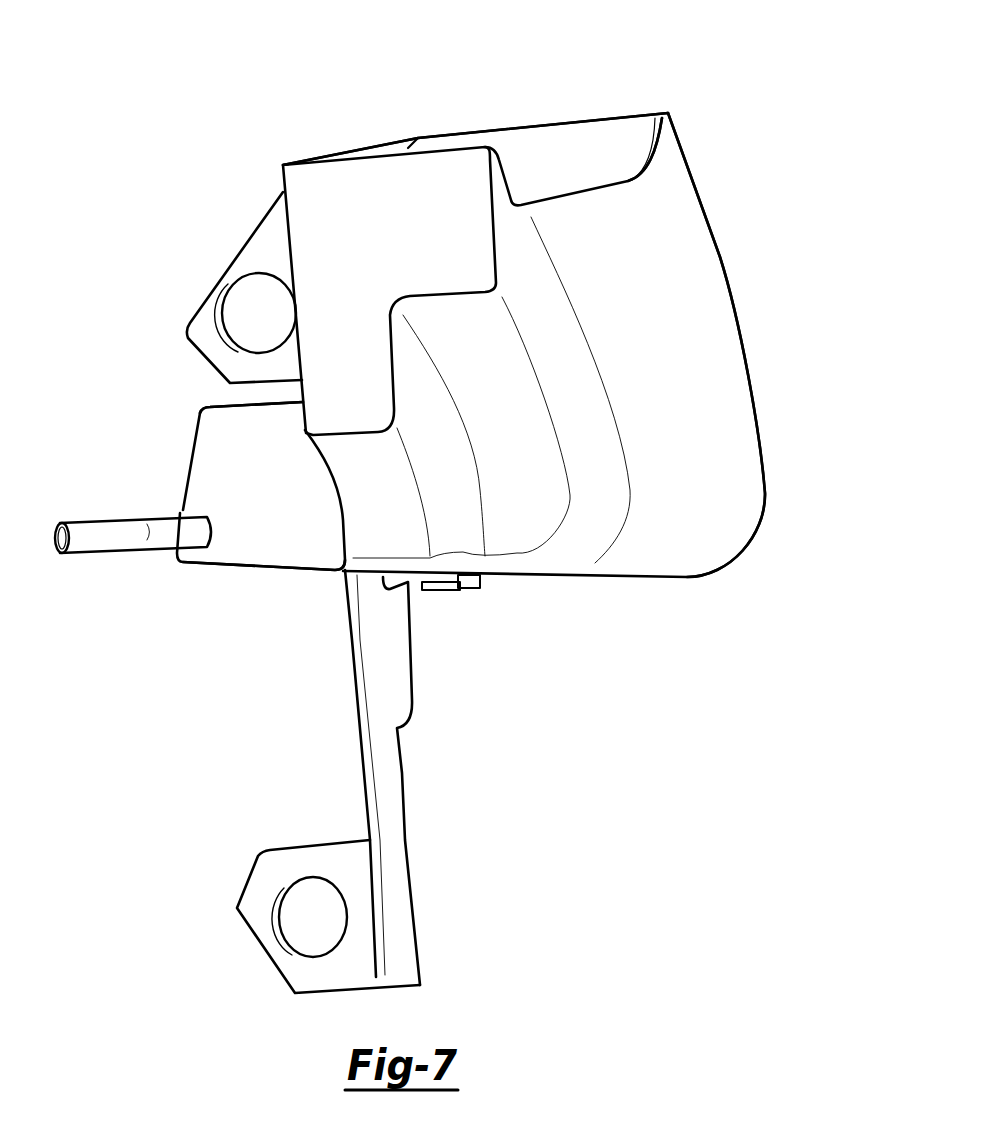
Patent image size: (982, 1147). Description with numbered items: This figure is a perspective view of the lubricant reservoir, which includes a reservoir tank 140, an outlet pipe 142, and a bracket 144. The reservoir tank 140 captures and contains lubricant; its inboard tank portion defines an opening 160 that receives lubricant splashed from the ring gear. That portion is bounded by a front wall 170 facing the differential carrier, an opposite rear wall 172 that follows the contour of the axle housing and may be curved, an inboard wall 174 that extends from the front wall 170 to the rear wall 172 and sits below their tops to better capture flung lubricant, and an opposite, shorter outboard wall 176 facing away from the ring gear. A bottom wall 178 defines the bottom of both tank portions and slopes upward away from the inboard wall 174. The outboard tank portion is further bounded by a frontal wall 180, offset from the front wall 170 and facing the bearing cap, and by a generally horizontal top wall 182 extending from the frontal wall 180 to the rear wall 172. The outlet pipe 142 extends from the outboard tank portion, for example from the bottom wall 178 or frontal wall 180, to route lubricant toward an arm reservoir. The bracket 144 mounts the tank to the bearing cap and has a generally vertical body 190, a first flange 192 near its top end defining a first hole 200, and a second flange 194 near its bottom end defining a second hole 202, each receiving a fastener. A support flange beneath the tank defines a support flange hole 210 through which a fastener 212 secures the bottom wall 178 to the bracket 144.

The reservoir tank 140 is at (765, 512).
The outlet pipe 142 is at (120, 522).
The bracket 144 is at (357, 682).
The opening 160 is at (548, 158).
The front wall 170 is at (418, 239).
The rear wall 172 is at (610, 117).
The inboard wall 174 is at (710, 288).
The outboard wall 176 is at (345, 153).
The bottom wall 178 is at (270, 573).
The frontal wall 180 is at (275, 494).
The top wall 182 is at (212, 403).
The body 190 is at (348, 685).
The first flange 192 is at (233, 257).
The second flange 194 is at (318, 848).
The first hole 200 is at (272, 329).
The second hole 202 is at (326, 933).
The support flange hole 210 is at (480, 588).
The fastener 212 is at (447, 591).